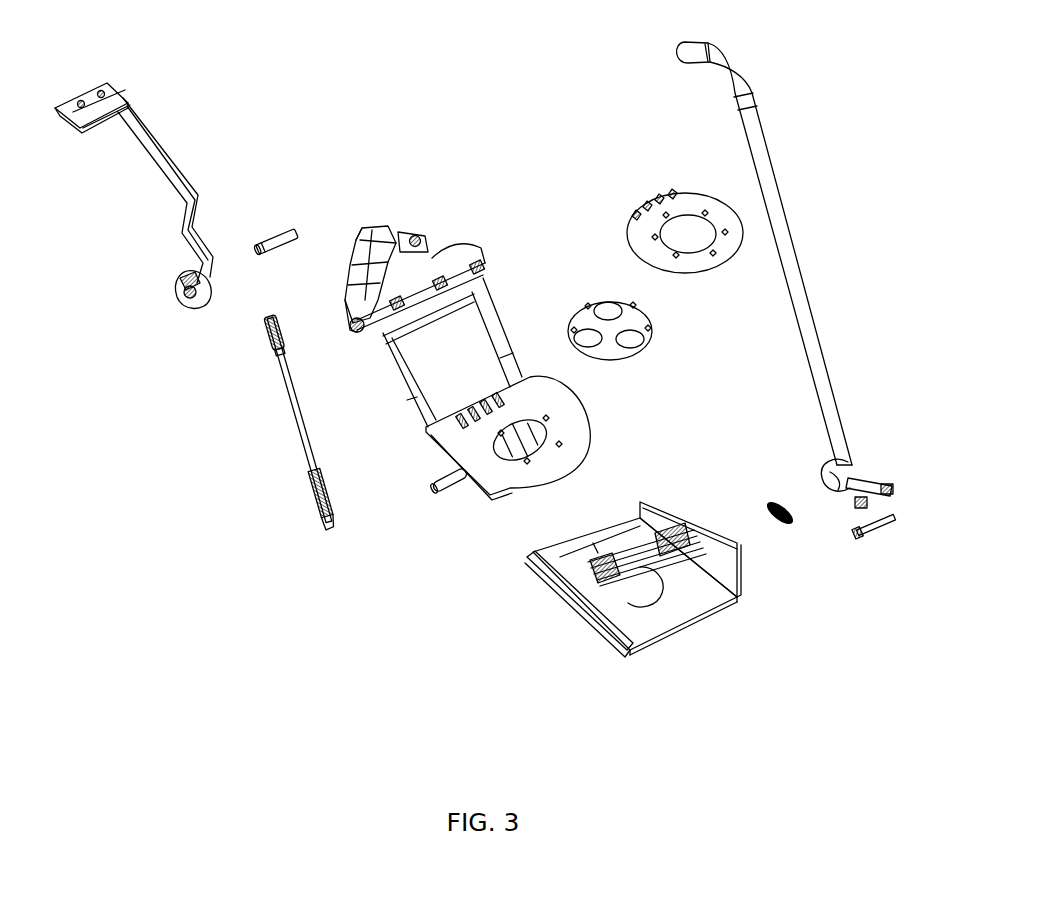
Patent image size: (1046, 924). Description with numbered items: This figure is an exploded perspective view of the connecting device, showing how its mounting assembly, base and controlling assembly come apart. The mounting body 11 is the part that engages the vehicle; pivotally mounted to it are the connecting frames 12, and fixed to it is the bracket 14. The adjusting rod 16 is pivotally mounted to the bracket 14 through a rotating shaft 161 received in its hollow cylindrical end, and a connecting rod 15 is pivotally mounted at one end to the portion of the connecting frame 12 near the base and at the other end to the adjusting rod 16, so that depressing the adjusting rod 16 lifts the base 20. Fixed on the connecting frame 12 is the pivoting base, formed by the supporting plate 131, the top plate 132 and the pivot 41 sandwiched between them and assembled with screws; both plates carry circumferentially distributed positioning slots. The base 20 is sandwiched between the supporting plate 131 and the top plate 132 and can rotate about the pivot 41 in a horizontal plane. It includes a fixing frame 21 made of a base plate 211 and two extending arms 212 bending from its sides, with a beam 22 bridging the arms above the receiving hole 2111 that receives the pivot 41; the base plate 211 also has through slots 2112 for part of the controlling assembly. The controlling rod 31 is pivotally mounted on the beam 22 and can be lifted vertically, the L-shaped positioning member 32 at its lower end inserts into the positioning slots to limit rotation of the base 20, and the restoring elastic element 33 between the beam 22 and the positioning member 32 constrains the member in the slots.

The mounting body 11 is at (387, 222).
The connecting frame 12 is at (500, 317).
The bracket 14 is at (352, 260).
The connecting rod 15 is at (295, 426).
The adjusting rod 16 is at (165, 155).
The rotating shaft 161 is at (283, 237).
The supporting plate 131 is at (517, 470).
The top plate 132 is at (722, 222).
The pivot 41 is at (632, 353).
The controlling rod 31 is at (788, 257).
The positioning member 32 is at (857, 460).
The restoring elastic element 33 is at (783, 497).
The base 20 is at (676, 621).
The fixing frame 21 is at (680, 612).
The base plate 211 is at (702, 597).
The extending arm 212 is at (600, 613).
The receiving hole 2111 is at (630, 595).
The through slot 2112 is at (543, 570).
The beam 22 is at (707, 541).